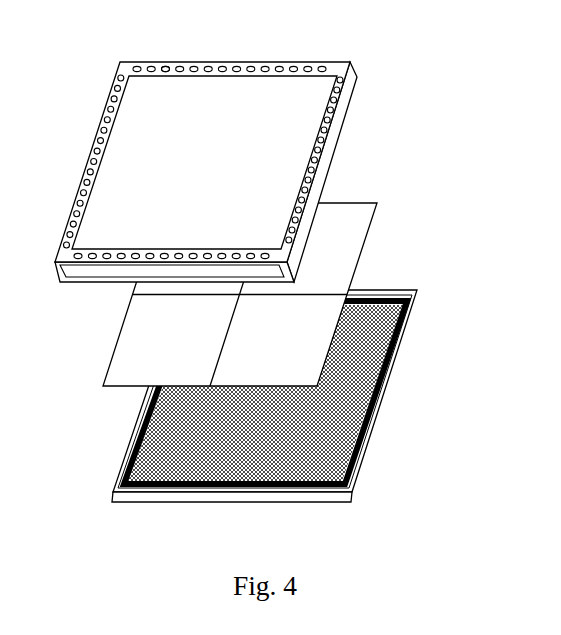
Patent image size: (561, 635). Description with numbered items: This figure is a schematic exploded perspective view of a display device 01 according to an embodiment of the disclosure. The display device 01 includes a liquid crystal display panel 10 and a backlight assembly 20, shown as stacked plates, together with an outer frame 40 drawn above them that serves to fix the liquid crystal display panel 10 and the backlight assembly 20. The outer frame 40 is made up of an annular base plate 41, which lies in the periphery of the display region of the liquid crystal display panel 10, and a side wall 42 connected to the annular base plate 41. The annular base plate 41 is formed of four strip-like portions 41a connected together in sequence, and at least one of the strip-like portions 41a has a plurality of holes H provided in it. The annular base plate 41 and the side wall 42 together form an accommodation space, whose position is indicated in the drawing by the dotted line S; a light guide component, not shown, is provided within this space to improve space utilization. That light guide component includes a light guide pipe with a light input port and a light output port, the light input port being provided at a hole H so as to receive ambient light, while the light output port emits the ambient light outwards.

The display device 01 is at (83, 38).
The liquid crystal display panel 10 is at (325, 255).
The backlight assembly 20 is at (421, 287).
The outer frame 40 is at (423, 40).
The annular base plate 41 is at (338, 72).
The strip-like portion 41a is at (228, 67).
The side wall 42 is at (328, 150).
The hole H is at (165, 74).
The dotted line indicating accommodation space S is at (105, 282).